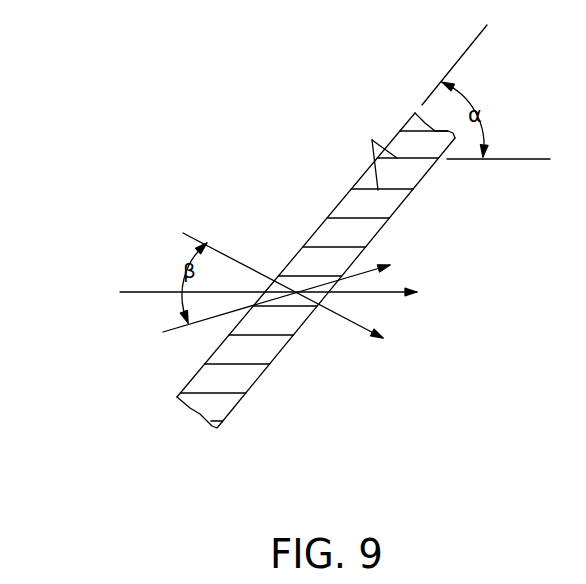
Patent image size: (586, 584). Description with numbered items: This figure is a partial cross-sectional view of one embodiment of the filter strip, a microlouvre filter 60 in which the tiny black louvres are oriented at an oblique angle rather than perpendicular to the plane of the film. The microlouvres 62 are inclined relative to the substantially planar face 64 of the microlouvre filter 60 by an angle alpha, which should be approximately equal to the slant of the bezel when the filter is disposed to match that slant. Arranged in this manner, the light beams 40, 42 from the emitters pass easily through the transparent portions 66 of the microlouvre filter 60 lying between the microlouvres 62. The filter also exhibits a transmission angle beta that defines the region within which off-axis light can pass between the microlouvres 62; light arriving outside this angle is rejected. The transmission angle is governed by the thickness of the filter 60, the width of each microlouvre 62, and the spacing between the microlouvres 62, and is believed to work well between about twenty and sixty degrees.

The light beam 40 is at (230, 274).
The light beam 42 is at (230, 274).
The microlouvre filter 60 is at (285, 257).
The microlouvres 62 is at (353, 138).
The substantially planar face 64 is at (364, 172).
The transparent portions 66 is at (350, 208).